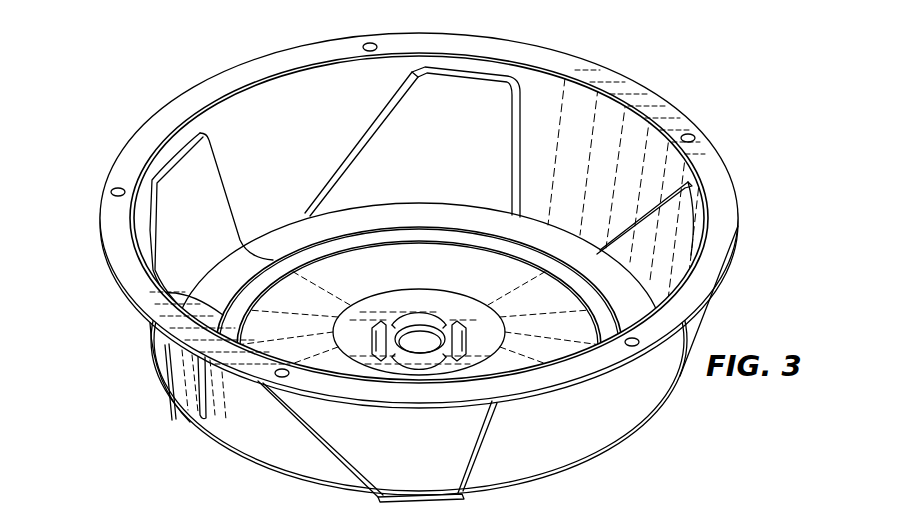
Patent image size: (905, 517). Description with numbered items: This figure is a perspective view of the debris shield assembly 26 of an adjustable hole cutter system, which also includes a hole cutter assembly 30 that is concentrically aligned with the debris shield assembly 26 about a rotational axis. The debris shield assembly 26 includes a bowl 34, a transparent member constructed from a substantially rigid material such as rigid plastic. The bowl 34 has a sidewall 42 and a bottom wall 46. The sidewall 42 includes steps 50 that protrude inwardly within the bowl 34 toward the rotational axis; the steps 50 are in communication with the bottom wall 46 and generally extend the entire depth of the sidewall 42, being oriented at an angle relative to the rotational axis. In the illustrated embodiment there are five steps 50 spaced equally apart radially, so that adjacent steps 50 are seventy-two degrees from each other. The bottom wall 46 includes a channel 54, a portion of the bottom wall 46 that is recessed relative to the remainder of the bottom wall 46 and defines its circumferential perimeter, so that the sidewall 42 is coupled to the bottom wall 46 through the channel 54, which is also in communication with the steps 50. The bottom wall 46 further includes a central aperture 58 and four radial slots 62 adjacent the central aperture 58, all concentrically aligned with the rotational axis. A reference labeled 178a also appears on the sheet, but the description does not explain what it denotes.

The debris shield assembly 26 is at (708, 107).
The bowl 34 is at (259, 67).
The sidewall 42 is at (590, 122).
The steps 50 is at (216, 165).
The channel 54 is at (176, 292).
The central aperture 58 is at (421, 336).
The radial slots 62 is at (384, 323).
The bottom wall 46 is at (586, 372).
The hole cutter assembly 30 is at (833, 500).
The housing portion 178a is at (777, 516).